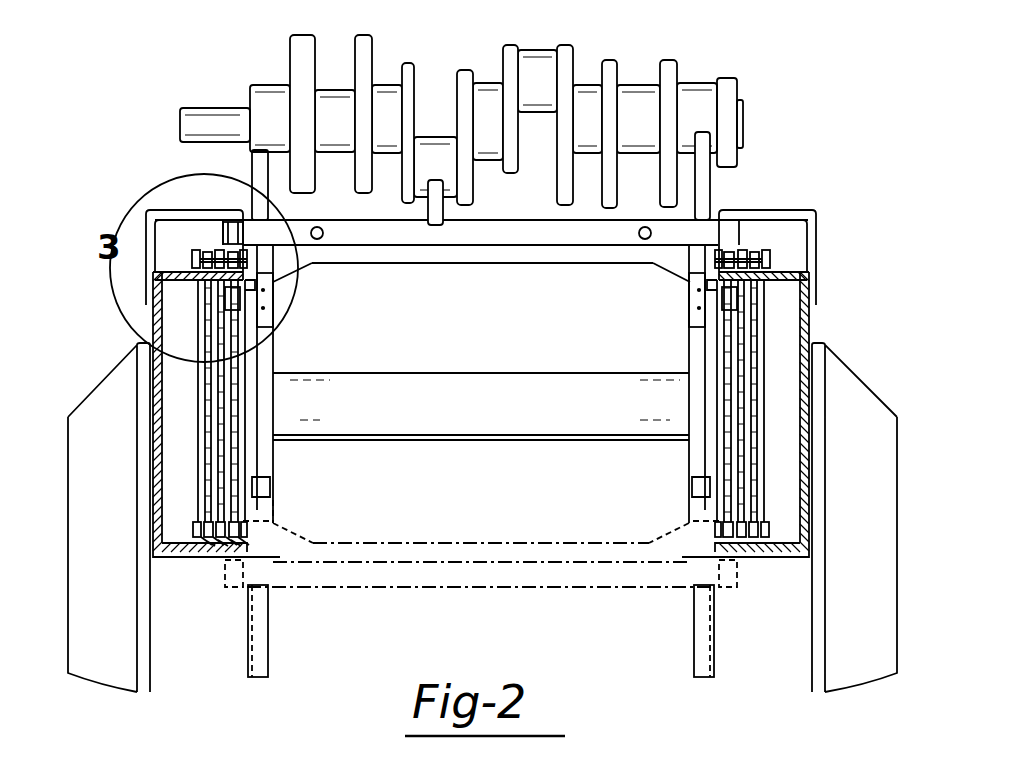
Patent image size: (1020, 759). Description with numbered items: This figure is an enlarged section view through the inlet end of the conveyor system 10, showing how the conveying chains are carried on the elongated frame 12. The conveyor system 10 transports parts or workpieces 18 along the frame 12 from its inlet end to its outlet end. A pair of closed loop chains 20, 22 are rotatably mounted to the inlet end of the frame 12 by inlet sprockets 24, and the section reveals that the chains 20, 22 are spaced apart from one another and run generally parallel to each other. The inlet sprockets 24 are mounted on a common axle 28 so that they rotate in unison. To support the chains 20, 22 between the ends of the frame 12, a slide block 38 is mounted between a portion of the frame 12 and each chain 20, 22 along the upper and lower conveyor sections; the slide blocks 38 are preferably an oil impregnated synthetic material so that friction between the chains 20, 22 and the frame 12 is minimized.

The conveyor system 10 is at (826, 182).
The elongated frame 12 is at (137, 378).
The workpieces 18 is at (612, 75).
The closed loop chain 20 is at (760, 242).
The closed loop chain 22 is at (200, 247).
The inlet sprockets 24 is at (197, 437).
The common axle 28 is at (468, 393).
The slide block 38 is at (190, 262).